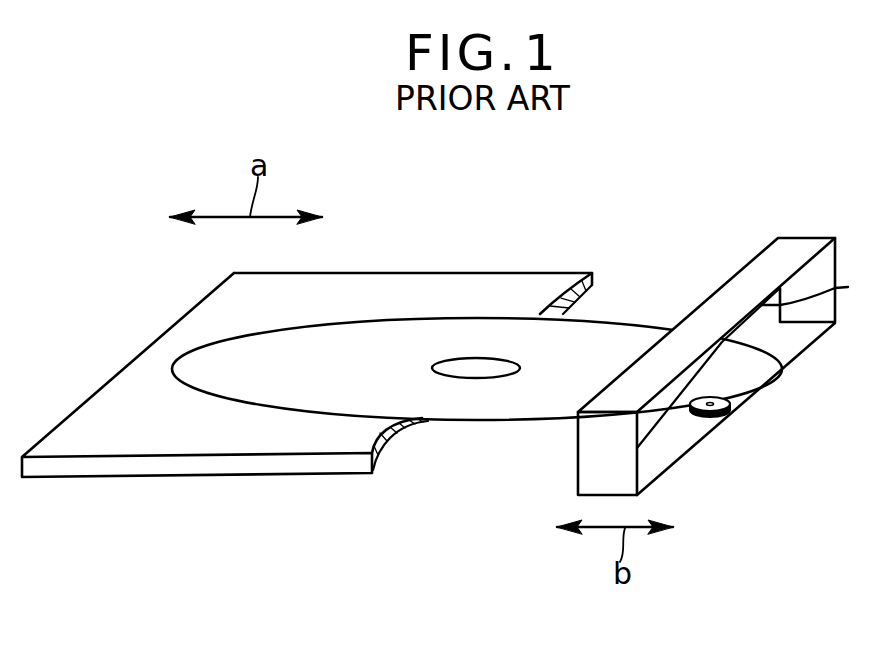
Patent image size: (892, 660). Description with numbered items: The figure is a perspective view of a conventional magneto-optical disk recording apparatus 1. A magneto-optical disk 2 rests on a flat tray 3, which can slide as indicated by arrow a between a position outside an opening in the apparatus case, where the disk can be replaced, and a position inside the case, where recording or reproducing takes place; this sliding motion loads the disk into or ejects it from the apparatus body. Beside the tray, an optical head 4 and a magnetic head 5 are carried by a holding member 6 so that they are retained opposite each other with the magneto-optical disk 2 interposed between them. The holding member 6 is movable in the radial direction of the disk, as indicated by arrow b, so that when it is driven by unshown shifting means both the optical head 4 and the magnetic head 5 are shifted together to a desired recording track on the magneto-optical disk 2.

The magneto-optical disk recording apparatus 1 is at (448, 422).
The magneto-optical disk 2 is at (620, 322).
The tray 3 is at (148, 467).
The optical head 4 is at (728, 413).
The magnetic head 5 is at (818, 288).
The holding member 6 is at (693, 447).